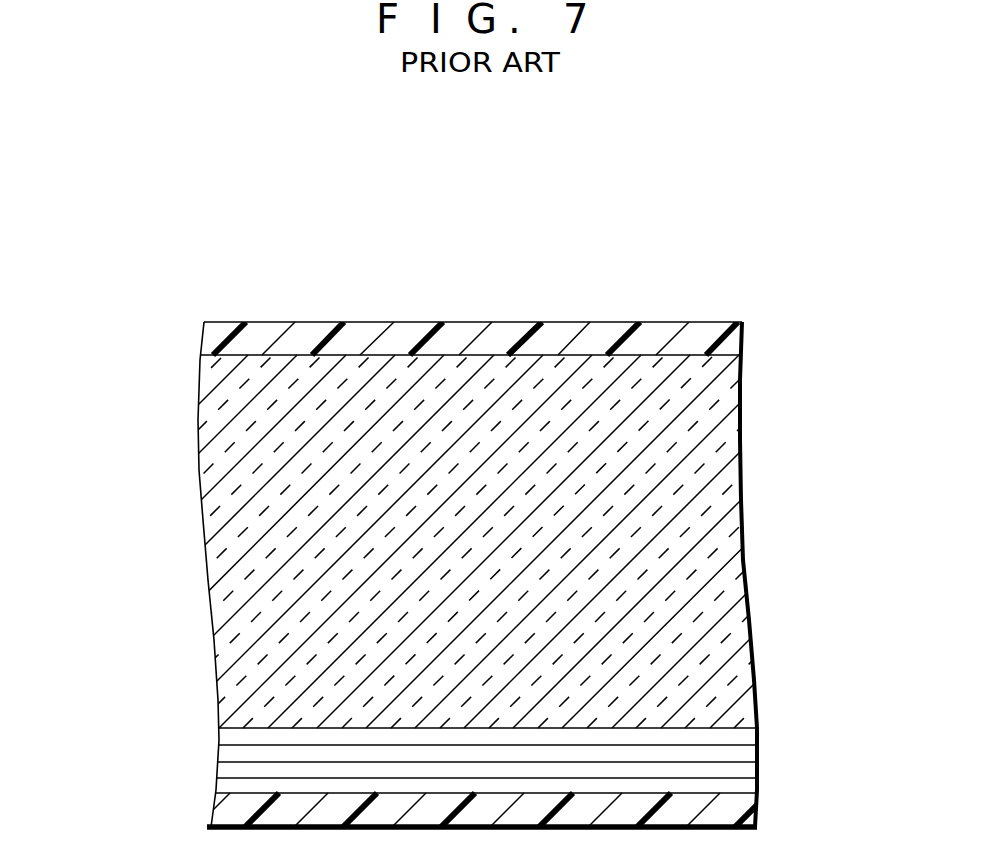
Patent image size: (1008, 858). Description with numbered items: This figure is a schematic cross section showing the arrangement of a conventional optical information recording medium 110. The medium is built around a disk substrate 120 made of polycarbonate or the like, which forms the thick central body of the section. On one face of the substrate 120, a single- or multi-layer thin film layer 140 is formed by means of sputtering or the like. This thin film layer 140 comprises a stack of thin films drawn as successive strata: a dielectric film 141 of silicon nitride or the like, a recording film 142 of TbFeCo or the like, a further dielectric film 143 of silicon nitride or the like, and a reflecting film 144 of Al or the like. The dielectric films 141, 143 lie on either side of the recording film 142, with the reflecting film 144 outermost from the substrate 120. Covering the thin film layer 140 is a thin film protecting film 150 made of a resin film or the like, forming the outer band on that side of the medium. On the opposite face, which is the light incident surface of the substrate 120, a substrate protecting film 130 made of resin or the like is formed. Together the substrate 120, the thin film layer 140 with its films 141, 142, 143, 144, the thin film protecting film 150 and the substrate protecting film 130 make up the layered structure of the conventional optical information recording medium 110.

The optical information recording medium 110 is at (718, 223).
The substrate 120 is at (742, 508).
The substrate protecting film 130 is at (737, 337).
The thin film layer 140 is at (128, 715).
The dielectric film 141 is at (220, 737).
The recording film 142 is at (220, 753).
The dielectric film 143 is at (220, 770).
The reflecting film 144 is at (220, 786).
The thin film protecting film 150 is at (737, 813).